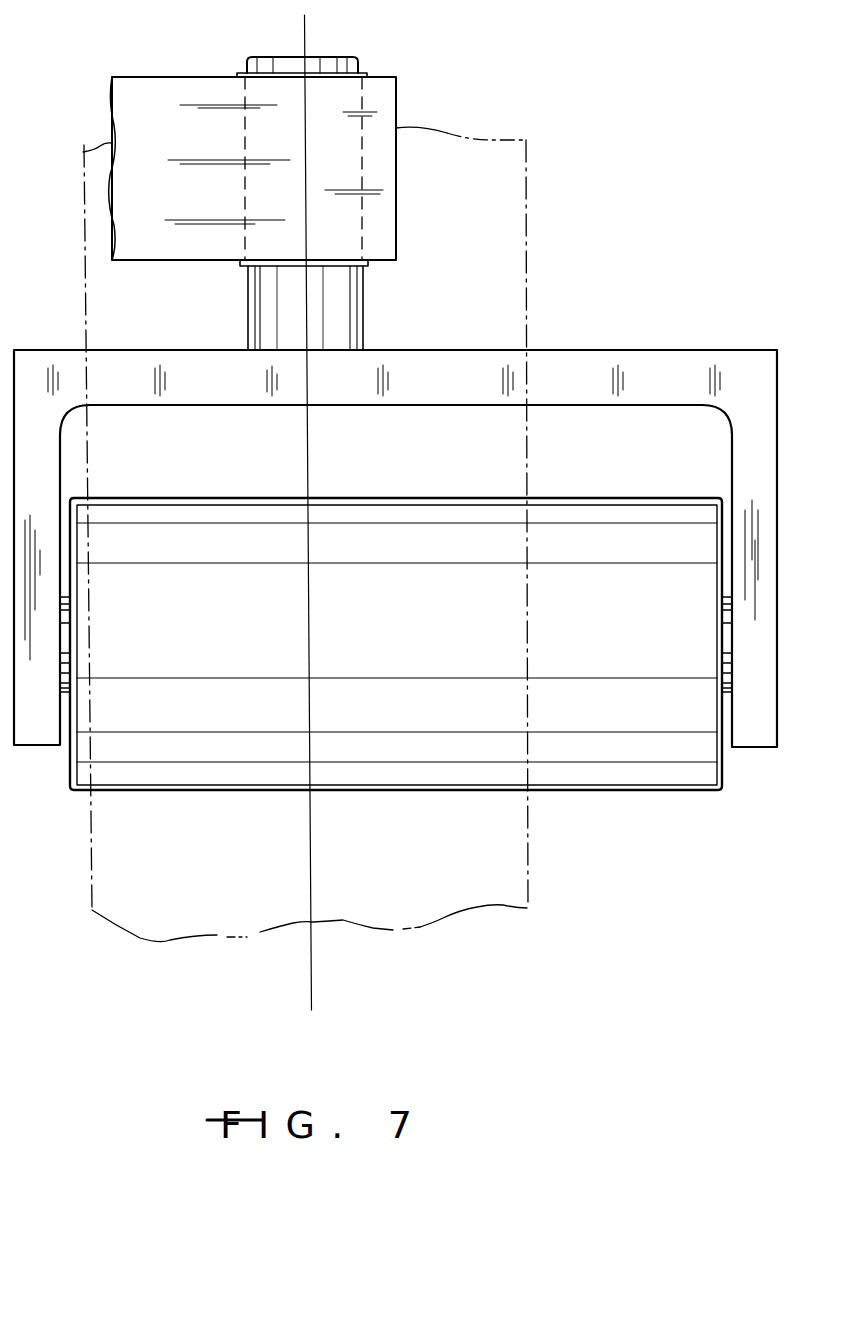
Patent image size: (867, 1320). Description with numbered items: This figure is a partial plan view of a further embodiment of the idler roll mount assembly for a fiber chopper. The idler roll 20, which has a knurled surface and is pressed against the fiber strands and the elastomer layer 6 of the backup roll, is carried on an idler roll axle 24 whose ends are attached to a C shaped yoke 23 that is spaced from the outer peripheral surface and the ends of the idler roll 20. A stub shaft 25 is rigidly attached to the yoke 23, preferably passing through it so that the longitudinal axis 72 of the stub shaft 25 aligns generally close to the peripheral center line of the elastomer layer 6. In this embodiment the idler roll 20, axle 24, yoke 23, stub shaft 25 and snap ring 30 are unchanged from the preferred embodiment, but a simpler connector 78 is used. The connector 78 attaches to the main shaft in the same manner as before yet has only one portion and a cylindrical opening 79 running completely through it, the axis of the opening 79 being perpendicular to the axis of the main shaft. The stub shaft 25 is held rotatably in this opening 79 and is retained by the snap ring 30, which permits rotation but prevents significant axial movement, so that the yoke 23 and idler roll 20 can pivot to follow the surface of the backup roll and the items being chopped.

The elastomer layer 6 is at (378, 846).
The idler roll 20 is at (668, 770).
The yoke 23 is at (565, 370).
The axle 24 is at (65, 635).
The stub shaft 25 is at (348, 308).
The snap ring 30 is at (367, 72).
The axis 72 is at (313, 945).
The connector 78 is at (162, 98).
The cylindrical opening 79 is at (363, 137).